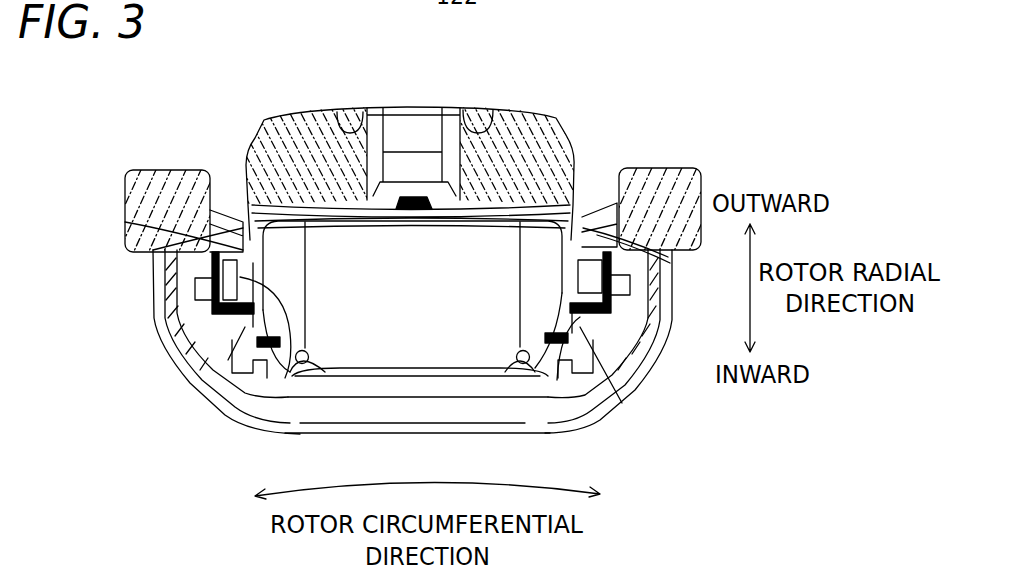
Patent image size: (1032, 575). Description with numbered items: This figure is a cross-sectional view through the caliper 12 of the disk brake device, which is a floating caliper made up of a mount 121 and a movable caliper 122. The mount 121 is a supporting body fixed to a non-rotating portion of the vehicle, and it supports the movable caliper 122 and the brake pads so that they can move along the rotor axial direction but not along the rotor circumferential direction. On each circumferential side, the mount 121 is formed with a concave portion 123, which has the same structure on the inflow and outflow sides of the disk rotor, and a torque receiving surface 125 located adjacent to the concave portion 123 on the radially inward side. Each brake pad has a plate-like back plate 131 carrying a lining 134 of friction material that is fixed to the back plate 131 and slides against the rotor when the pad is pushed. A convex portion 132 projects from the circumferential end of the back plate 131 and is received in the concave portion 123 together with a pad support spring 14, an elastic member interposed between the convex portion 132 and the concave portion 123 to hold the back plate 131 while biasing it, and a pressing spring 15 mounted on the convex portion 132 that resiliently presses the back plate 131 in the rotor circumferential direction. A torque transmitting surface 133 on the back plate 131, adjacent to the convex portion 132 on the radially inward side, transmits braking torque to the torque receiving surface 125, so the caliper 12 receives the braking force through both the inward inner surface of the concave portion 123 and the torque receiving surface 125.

The caliper 12 is at (156, 113).
The pad support spring 14 is at (212, 273).
The pressing spring 15 is at (126, 223).
The mount 121 is at (656, 172).
The movable caliper 122 is at (305, 115).
The concave portion 123 is at (214, 308).
The torque receiving surface 125 is at (250, 332).
The back plate 131 is at (512, 362).
The convex portion 132 is at (292, 305).
The torque transmitting surface 133 is at (228, 360).
The lining 134 is at (410, 345).